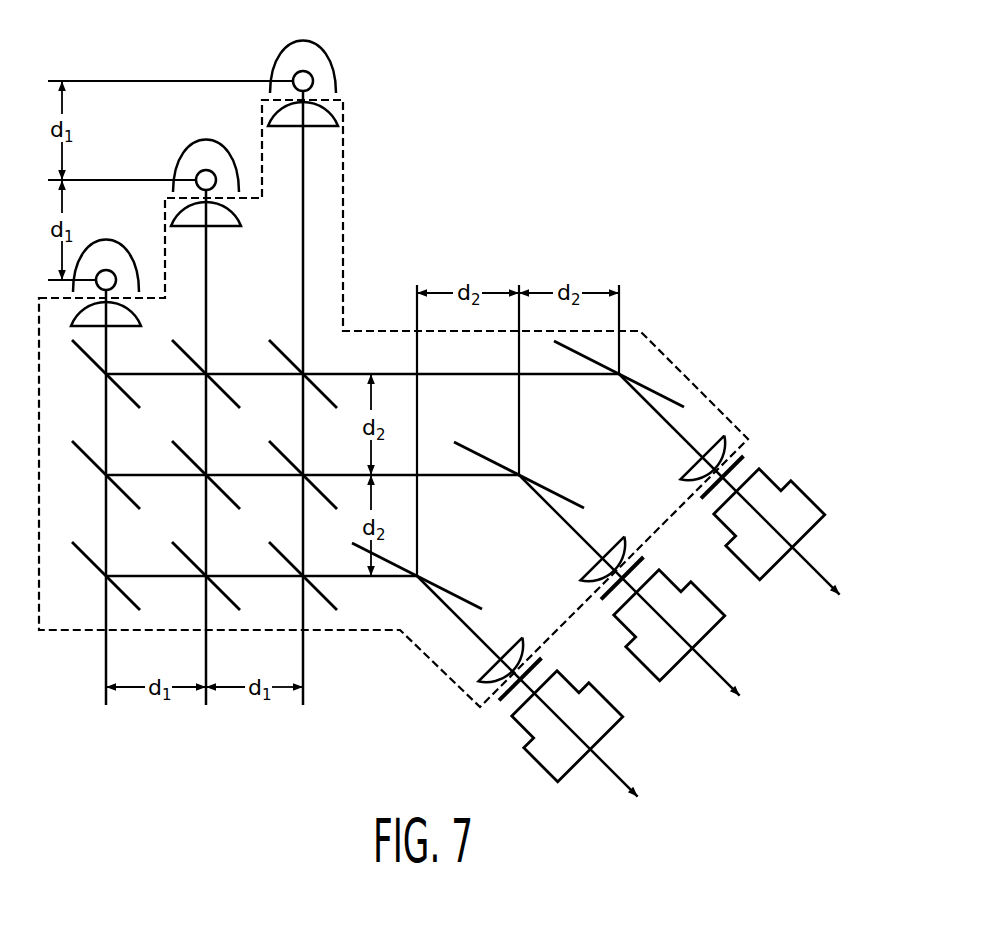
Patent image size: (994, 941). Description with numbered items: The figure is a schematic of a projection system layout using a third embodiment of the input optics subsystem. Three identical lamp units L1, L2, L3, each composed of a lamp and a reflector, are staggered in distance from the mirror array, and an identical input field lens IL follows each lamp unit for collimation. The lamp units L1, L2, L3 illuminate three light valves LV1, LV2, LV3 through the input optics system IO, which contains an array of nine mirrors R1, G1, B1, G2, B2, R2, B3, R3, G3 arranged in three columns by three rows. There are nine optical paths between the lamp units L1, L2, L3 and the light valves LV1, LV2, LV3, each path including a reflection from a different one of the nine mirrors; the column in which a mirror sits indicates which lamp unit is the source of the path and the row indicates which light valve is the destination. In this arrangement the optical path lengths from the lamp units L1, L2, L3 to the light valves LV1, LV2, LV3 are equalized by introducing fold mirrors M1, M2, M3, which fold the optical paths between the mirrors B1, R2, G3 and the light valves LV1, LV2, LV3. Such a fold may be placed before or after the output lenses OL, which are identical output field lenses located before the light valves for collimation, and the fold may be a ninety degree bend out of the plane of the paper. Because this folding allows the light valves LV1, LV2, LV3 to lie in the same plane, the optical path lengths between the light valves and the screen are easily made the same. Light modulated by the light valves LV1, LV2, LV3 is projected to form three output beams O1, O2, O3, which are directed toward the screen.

The lamp unit L1 is at (101, 228).
The lamp unit L2 is at (204, 126).
The lamp unit L3 is at (295, 30).
The input field lens IL is at (122, 328).
The input optics system IO is at (343, 200).
The mirror R1 is at (91, 364).
The mirror G1 is at (240, 400).
The mirror B1 is at (333, 406).
The mirror G2 is at (91, 465).
The mirror B2 is at (176, 447).
The mirror R2 is at (274, 447).
The mirror B3 is at (91, 566).
The mirror R3 is at (178, 549).
The mirror G3 is at (276, 549).
The mirror M1 is at (652, 388).
The mirror M2 is at (541, 482).
The mirror M3 is at (433, 577).
The output lens OL is at (725, 436).
The light valve LV1 is at (747, 458).
The light valve LV2 is at (646, 560).
The light valve LV3 is at (544, 660).
The output beam O1 is at (813, 566).
The output beam O2 is at (713, 667).
The output beam O3 is at (611, 768).